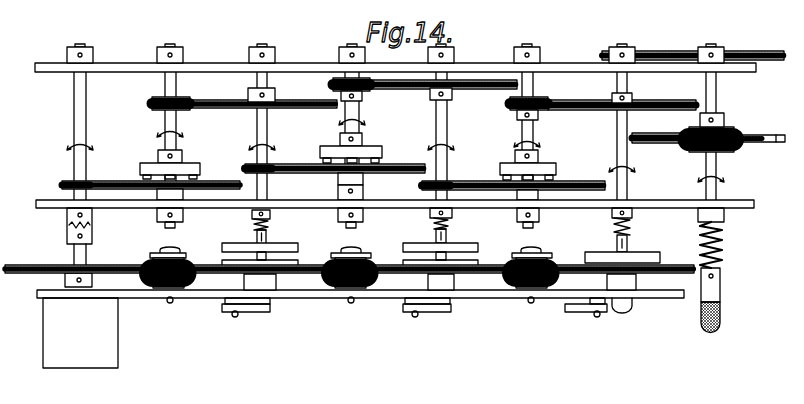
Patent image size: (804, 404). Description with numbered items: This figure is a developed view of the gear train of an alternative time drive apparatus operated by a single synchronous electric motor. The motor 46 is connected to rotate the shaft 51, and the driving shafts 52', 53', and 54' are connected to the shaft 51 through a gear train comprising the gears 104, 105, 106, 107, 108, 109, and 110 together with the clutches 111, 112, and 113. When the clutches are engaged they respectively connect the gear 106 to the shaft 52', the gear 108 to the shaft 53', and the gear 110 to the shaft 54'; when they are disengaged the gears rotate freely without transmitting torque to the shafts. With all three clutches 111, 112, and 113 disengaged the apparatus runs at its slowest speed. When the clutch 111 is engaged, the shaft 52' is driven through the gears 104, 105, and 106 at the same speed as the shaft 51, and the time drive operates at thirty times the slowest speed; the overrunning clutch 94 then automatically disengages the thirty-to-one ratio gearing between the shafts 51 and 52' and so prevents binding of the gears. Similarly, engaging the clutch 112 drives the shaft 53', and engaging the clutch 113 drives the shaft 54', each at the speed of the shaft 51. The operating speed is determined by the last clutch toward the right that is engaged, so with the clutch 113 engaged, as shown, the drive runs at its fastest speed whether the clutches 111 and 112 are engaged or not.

The shaft 51 is at (84, 100).
The driving shaft 52' is at (277, 136).
The driving shaft 53' is at (456, 136).
The driving shaft 54' is at (638, 131).
The overrunning clutch 94 is at (180, 155).
The gear 104 is at (140, 270).
The gear 105 is at (186, 281).
The gear 106 is at (318, 276).
The gear 107 is at (366, 280).
The gear 108 is at (500, 272).
The gear 109 is at (546, 281).
The gear 110 is at (680, 270).
The clutch 111 is at (280, 246).
The clutch 112 is at (418, 247).
The clutch 113 is at (596, 252).
The motor 46 is at (112, 360).